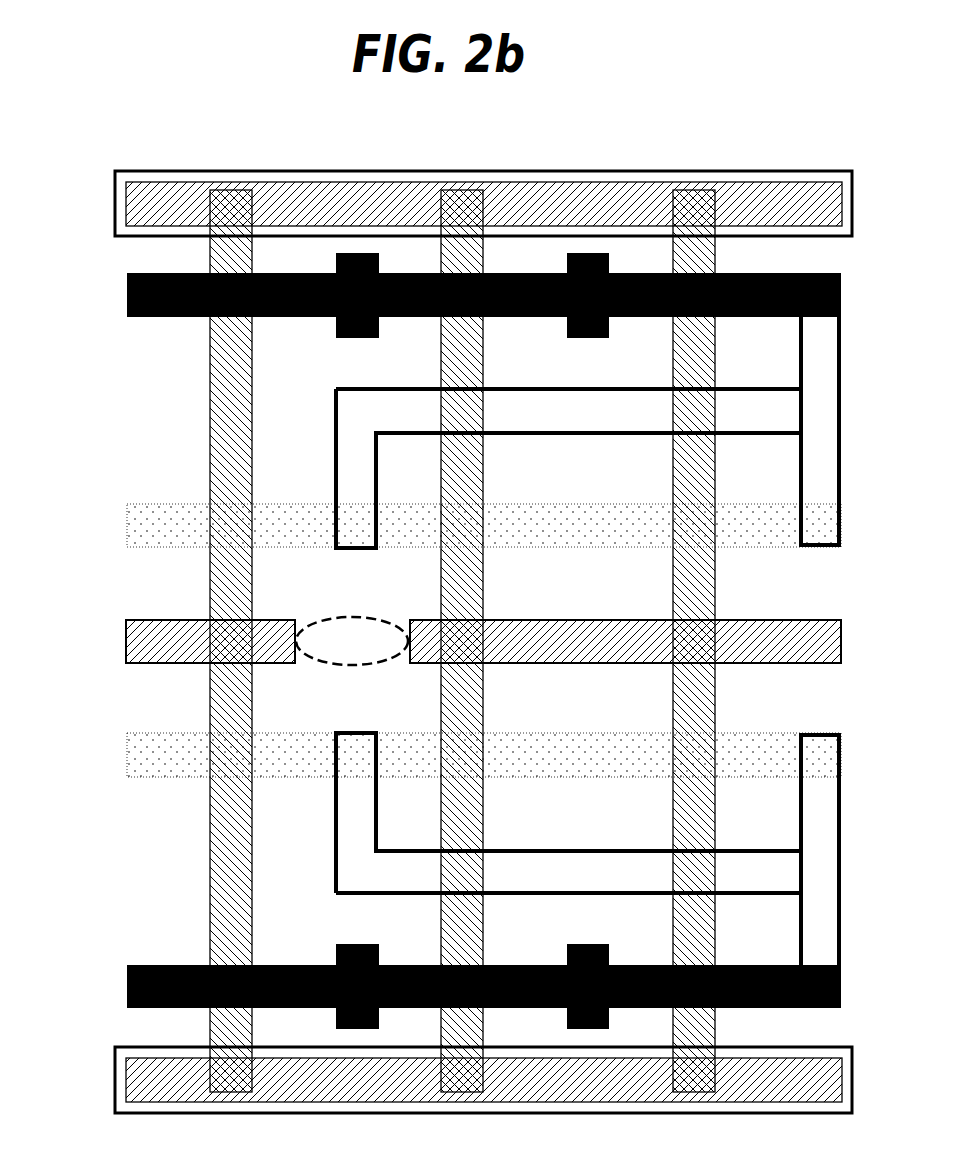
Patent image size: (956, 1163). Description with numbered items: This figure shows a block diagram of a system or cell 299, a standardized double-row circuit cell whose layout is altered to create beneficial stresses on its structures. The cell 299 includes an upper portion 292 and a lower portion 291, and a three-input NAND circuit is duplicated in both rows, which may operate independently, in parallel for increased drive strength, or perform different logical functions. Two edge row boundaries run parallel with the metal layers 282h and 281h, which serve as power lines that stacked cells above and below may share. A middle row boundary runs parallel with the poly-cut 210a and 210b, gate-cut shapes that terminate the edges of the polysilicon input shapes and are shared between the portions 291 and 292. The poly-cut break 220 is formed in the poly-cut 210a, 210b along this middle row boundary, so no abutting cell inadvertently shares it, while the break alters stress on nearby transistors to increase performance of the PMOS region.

The cell 299 is at (764, 70).
The upper portion 292 is at (105, 170).
The lower portion 291 is at (105, 1113).
The metal layer 282h is at (180, 164).
The metal layer 281h is at (100, 1044).
The poly-cut 210a is at (210, 641).
The poly-cut 210b is at (625, 641).
The poly-cut break 220 is at (328, 674).